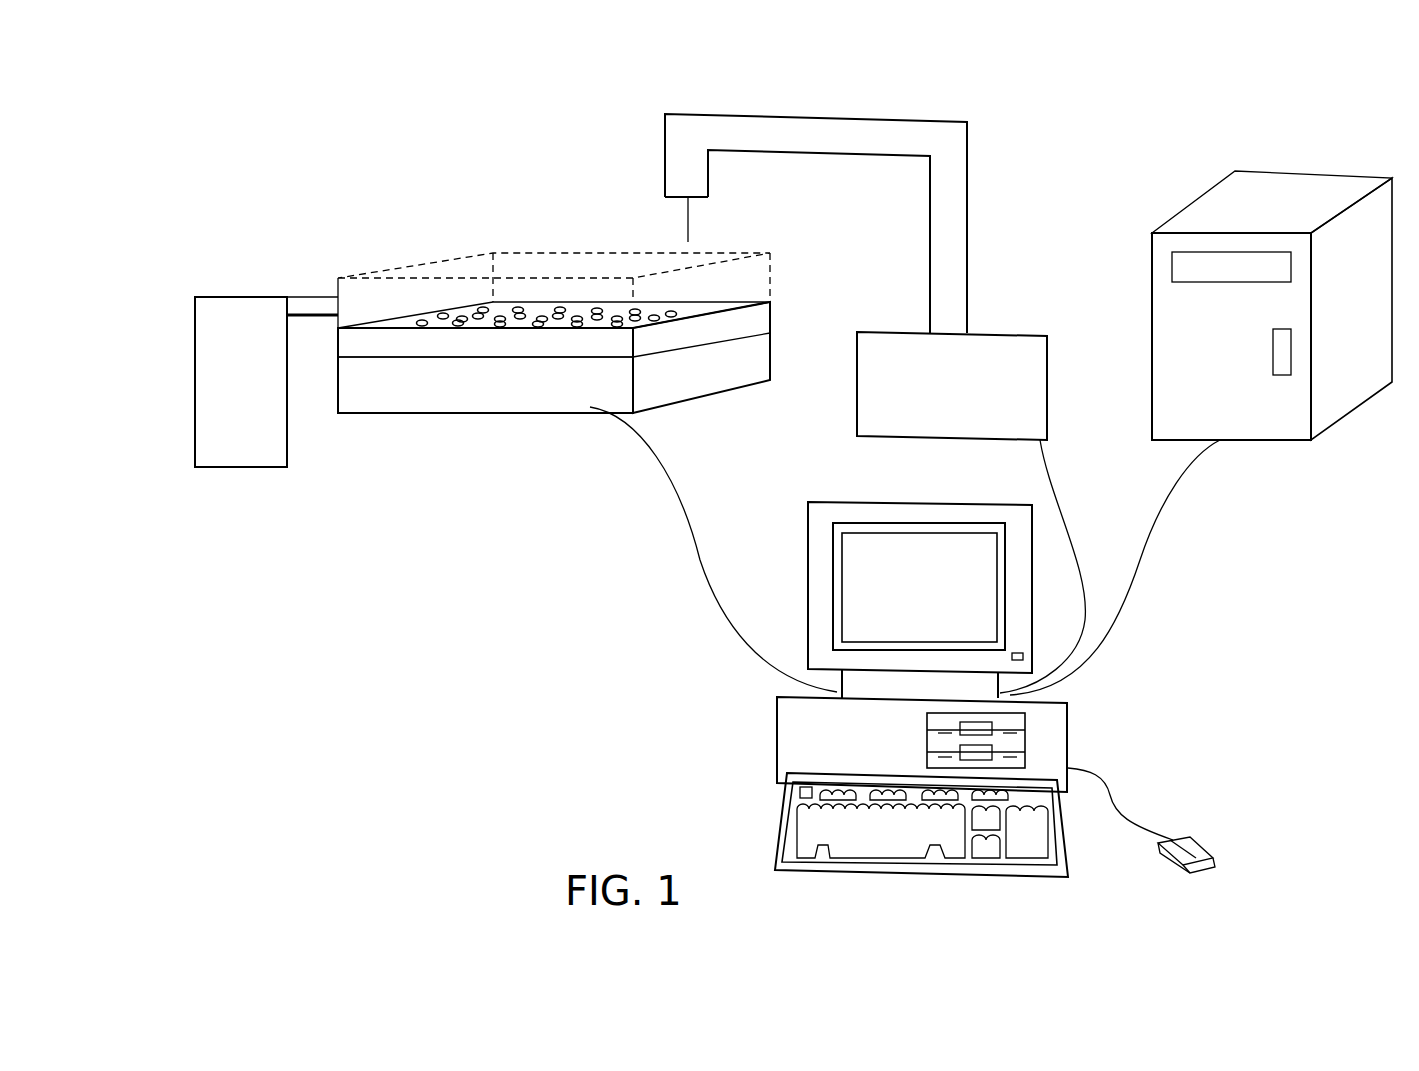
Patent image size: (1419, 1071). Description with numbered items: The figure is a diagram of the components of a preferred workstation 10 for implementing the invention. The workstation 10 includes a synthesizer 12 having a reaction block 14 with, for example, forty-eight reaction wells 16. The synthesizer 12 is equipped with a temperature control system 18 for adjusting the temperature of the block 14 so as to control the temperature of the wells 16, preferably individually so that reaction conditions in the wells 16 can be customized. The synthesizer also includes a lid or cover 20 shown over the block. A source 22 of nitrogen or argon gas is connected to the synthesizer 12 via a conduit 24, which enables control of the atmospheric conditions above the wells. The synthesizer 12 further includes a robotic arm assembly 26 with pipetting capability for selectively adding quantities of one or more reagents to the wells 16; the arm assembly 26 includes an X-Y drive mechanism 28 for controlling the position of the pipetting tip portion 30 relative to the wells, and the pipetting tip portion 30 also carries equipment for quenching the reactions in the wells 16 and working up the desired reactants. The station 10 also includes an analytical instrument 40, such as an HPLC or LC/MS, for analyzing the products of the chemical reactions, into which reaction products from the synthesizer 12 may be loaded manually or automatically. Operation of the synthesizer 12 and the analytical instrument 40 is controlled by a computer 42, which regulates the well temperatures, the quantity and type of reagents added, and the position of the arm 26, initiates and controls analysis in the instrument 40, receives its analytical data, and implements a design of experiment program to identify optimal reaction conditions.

The workstation 10 is at (1021, 125).
The synthesizer 12 is at (335, 253).
The reaction block 14 is at (735, 315).
The reaction wells 16 is at (586, 310).
The temperature control system 18 is at (666, 397).
The lid or cover 20 is at (605, 248).
The source of nitrogen or argon gas 22 is at (236, 310).
The conduit 24 is at (302, 317).
The robotic arm assembly 26 is at (665, 125).
The X-Y drive mechanism 28 is at (1047, 365).
The pipetting tip portion 30 is at (700, 204).
The analytical instrument 40 is at (1195, 200).
The computer 42 is at (810, 500).